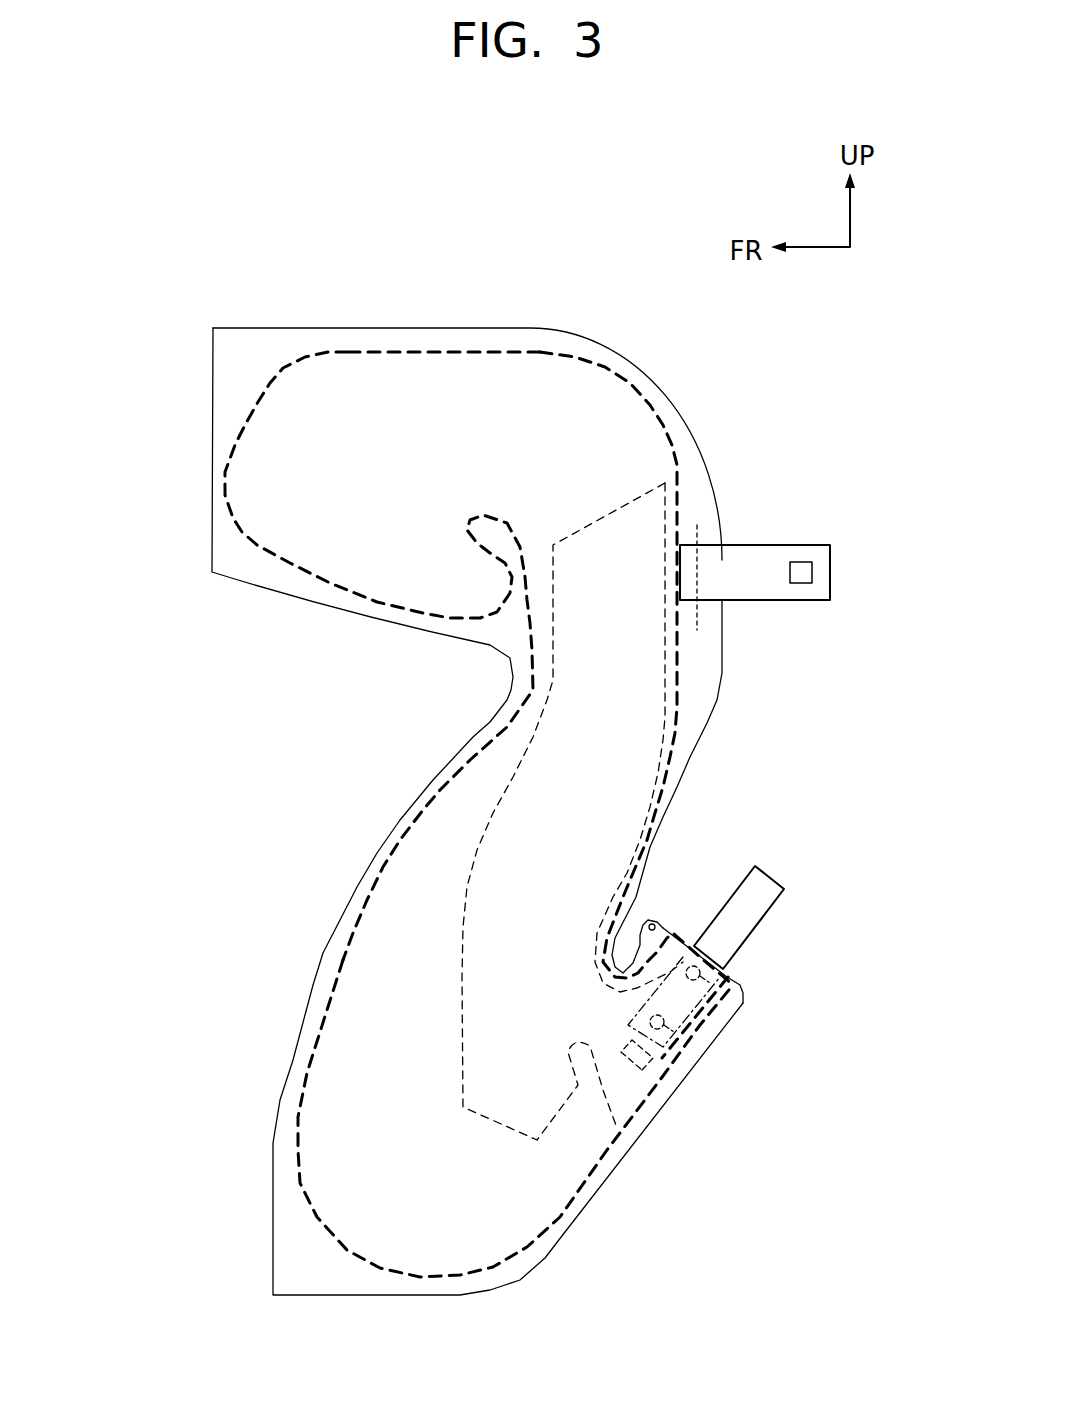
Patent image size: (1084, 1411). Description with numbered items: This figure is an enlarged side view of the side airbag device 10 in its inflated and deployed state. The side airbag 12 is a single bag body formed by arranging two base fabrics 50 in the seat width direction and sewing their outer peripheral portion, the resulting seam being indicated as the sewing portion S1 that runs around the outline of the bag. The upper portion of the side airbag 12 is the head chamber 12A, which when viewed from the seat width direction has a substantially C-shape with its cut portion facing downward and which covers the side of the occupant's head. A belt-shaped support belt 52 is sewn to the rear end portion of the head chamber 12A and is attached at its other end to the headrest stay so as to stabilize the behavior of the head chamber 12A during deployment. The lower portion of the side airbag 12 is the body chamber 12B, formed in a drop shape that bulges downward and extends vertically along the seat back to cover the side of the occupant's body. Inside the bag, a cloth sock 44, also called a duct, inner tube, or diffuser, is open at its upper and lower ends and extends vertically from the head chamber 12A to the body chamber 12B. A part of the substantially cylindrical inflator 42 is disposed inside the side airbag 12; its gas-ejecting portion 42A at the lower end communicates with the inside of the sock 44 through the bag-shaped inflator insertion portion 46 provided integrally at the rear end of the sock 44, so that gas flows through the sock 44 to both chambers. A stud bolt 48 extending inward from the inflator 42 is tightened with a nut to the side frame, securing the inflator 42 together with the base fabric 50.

The side airbag device 10 is at (278, 250).
The side airbag 12 is at (600, 328).
The head chamber 12A is at (435, 385).
The body chamber 12B is at (365, 1038).
The sewing portion S1 is at (655, 396).
The base fabric 50 is at (244, 352).
The support belt 52 is at (758, 557).
The sock 44 is at (667, 718).
The inflator 42 is at (776, 866).
The gas-ejecting portion 42A is at (660, 1063).
The inflator insertion portion 46 is at (620, 1135).
The stud bolt 48 is at (740, 1007).